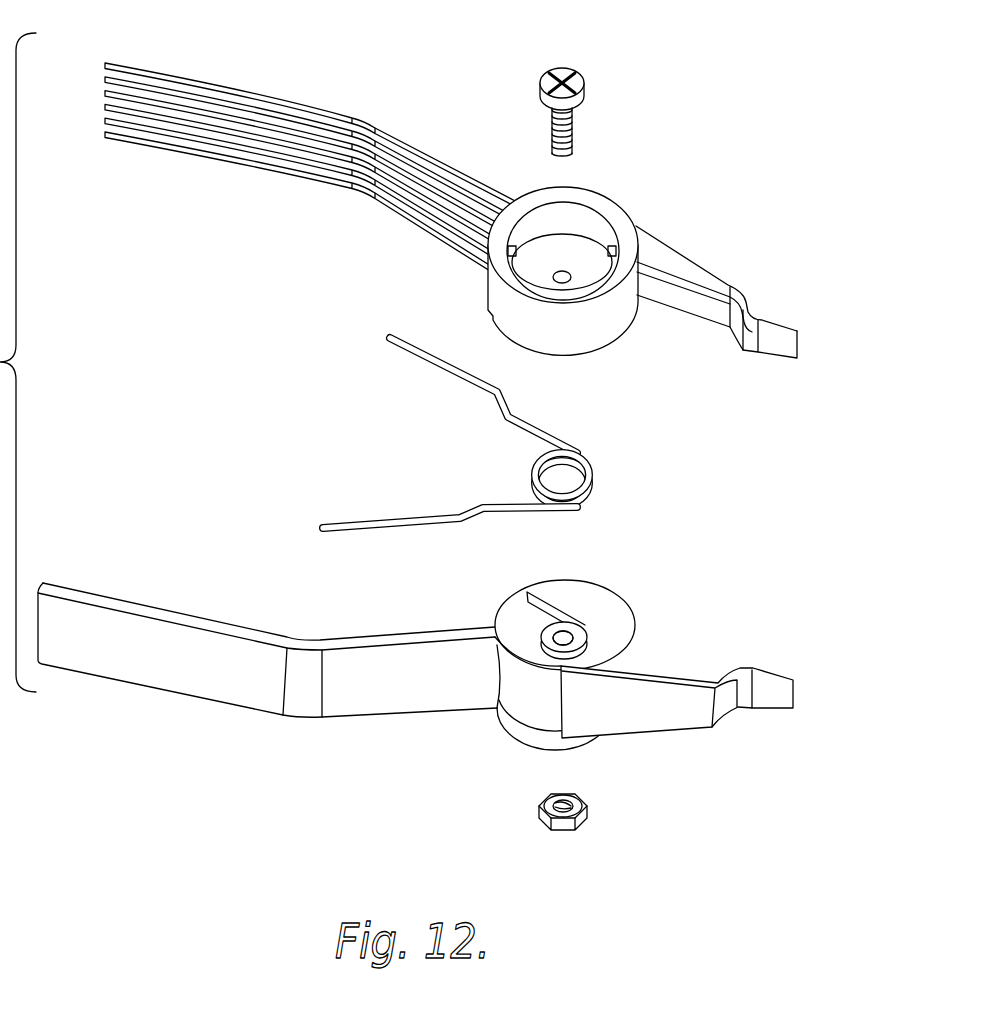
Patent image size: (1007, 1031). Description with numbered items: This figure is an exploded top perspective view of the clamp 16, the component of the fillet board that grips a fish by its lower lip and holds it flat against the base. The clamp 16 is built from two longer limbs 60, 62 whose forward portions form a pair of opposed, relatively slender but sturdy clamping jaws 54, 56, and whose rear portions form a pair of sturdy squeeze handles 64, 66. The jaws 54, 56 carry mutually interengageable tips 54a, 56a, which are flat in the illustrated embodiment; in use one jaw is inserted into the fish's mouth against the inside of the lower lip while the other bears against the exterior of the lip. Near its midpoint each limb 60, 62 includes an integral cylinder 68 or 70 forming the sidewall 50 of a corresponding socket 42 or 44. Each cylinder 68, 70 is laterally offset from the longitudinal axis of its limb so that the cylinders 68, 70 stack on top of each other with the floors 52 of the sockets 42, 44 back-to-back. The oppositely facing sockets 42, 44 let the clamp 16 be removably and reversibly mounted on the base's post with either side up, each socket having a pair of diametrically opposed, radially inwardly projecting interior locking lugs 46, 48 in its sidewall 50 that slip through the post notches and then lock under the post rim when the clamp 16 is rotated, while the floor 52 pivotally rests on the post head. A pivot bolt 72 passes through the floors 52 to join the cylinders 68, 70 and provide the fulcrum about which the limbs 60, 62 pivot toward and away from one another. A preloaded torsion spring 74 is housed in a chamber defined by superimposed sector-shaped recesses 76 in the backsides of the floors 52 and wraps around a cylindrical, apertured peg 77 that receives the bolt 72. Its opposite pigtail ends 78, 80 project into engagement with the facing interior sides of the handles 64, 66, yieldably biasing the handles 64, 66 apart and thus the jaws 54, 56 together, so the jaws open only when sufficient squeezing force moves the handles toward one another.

The clamp 16 is at (511, 78).
The socket 42 is at (603, 254).
The socket 44 is at (443, 679).
The locking lug 46 is at (612, 250).
The locking lug 48 is at (513, 246).
The sidewall 50 is at (617, 217).
The floor 52 is at (563, 244).
The clamping jaw 54 is at (741, 316).
The tip 54a is at (776, 350).
The clamping jaw 56 is at (705, 706).
The tip 56a is at (768, 684).
The limb 60 is at (332, 182).
The limb 62 is at (267, 667).
The squeeze handle 64 is at (250, 96).
The squeeze handle 66 is at (193, 621).
The cylinder 68 is at (610, 320).
The cylinder 70 is at (578, 746).
The pivot bolt 72 is at (573, 81).
The torsion spring 74 is at (499, 433).
The sector-shaped recess 76 is at (562, 679).
The apertured peg 77 is at (576, 631).
The pigtail end 78 is at (455, 372).
The pigtail end 80 is at (390, 521).